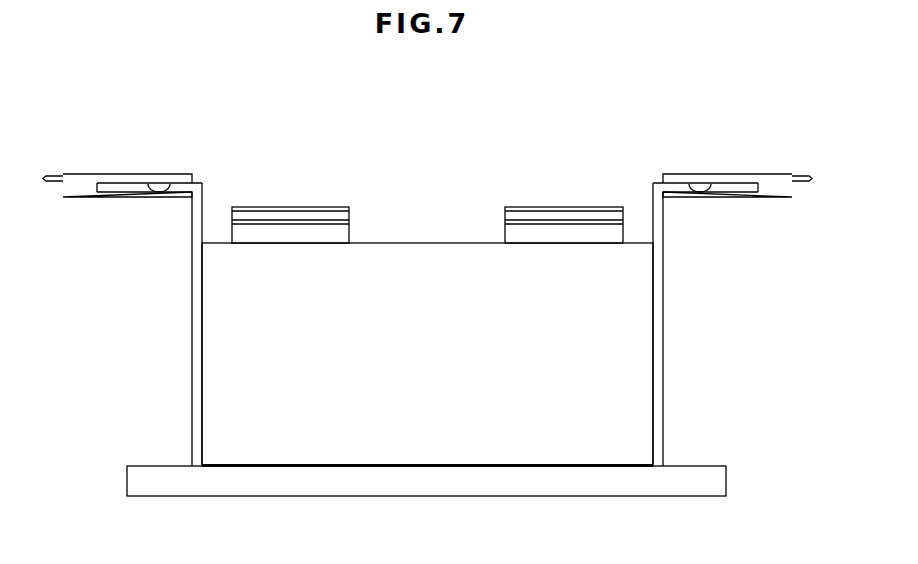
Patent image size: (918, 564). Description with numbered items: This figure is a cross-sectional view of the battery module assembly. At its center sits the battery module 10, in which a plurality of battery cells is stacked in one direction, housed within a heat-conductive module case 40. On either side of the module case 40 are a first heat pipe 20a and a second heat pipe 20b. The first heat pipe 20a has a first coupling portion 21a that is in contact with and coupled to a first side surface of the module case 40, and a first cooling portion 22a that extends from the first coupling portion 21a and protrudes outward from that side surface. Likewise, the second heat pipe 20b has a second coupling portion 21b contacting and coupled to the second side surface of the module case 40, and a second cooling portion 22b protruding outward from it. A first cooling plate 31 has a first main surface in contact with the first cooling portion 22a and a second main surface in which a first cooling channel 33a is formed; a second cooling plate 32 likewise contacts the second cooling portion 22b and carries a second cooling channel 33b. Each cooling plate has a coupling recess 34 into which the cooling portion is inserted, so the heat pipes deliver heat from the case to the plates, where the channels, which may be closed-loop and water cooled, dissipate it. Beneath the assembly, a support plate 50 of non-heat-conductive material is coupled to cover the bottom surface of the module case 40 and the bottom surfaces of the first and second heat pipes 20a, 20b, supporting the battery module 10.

The battery module 10 is at (419, 239).
The first heat pipe 20a is at (136, 324).
The second heat pipe 20b is at (717, 324).
The first coupling portion 21a is at (120, 254).
The second coupling portion 21b is at (735, 254).
The first cooling portion 22a is at (137, 189).
The second cooling portion 22b is at (714, 190).
The first cooling plate 31 is at (131, 168).
The second cooling plate 32 is at (737, 168).
The first cooling channel 33a is at (52, 173).
The second cooling channel 33b is at (802, 173).
The coupling recess 34 is at (153, 187).
The module case 40 is at (375, 453).
The support plate 50 is at (427, 484).